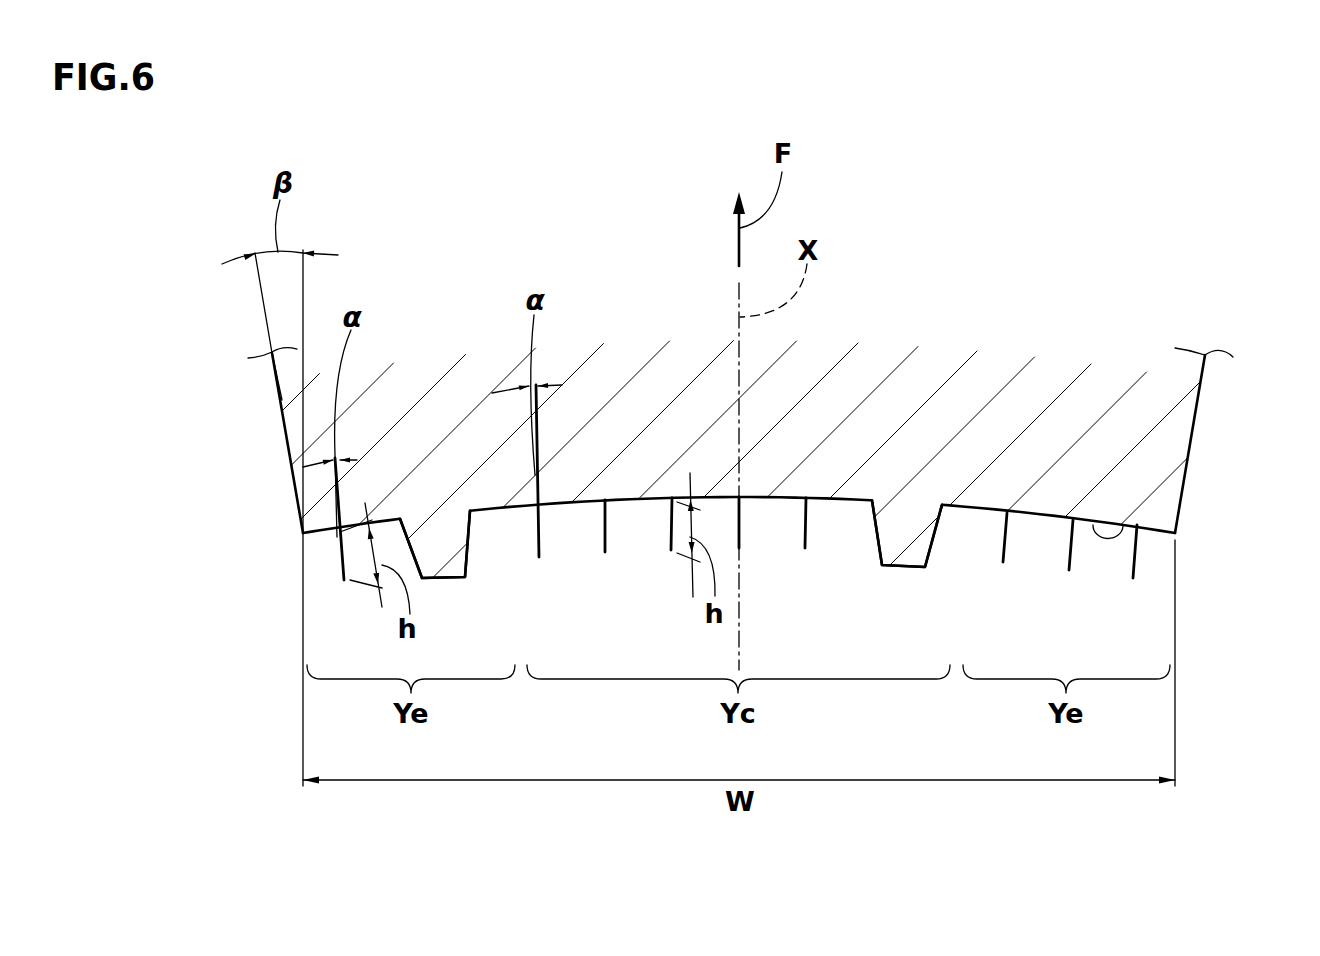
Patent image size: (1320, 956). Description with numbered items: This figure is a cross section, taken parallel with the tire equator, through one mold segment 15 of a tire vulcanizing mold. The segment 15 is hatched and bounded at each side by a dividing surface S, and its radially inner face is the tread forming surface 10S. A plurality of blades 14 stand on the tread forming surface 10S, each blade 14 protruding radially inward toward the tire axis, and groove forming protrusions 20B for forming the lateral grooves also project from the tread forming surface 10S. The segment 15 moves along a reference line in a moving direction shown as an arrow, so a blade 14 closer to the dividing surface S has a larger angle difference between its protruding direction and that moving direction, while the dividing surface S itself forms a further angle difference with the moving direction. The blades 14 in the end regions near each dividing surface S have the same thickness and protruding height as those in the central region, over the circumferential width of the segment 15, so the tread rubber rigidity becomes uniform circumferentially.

The blade 14 is at (335, 553).
The segment 15 is at (920, 343).
The groove forming protrusion 20B is at (467, 550).
The tread forming surface 10S is at (1123, 523).
The dividing surface S is at (286, 435).